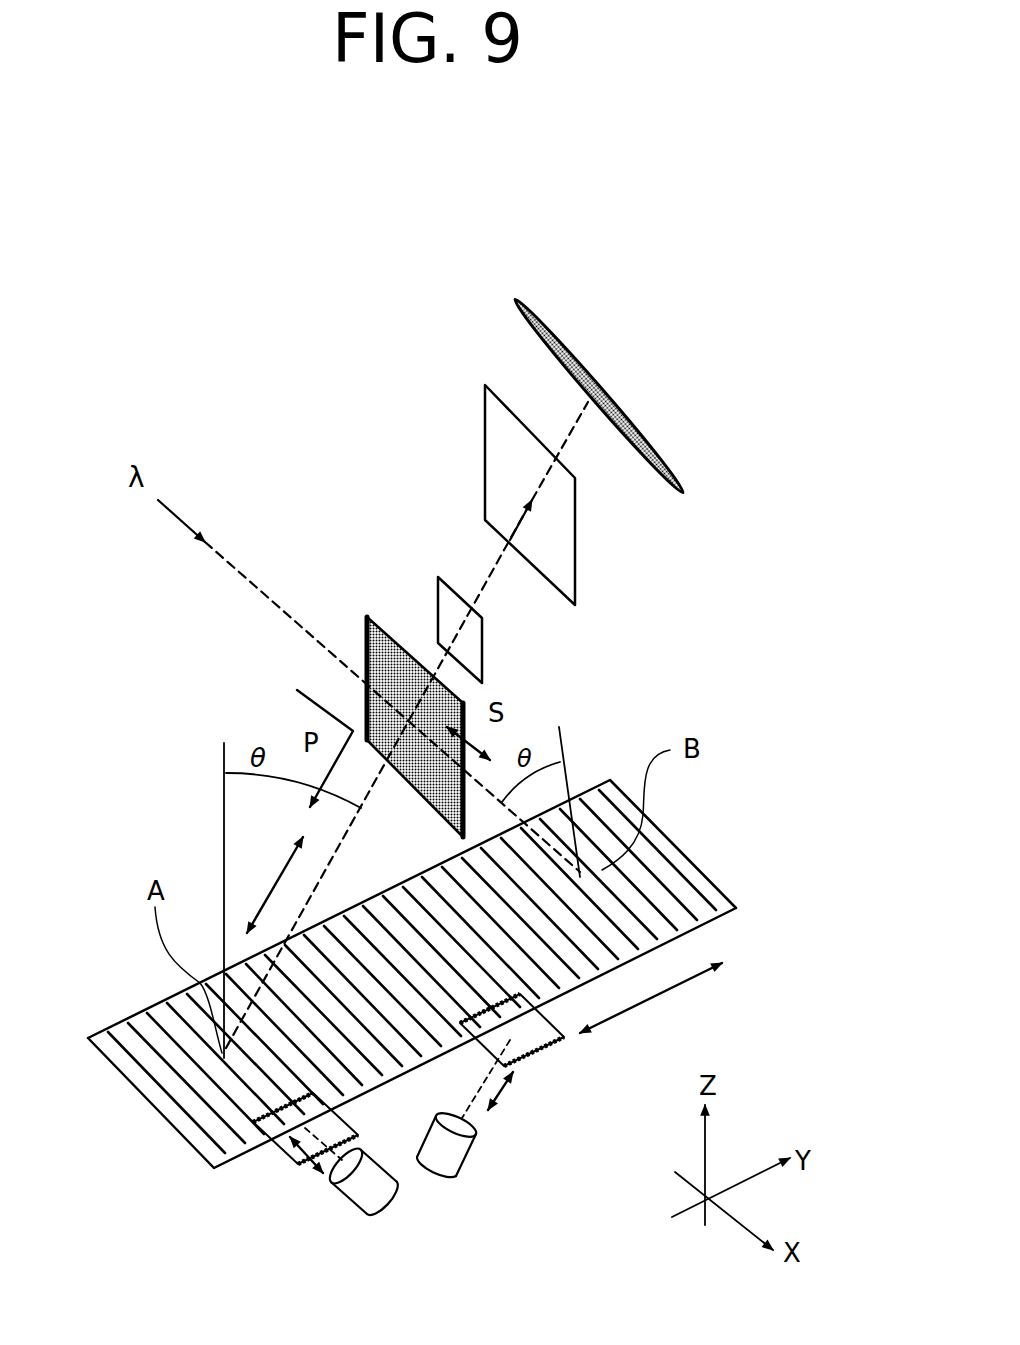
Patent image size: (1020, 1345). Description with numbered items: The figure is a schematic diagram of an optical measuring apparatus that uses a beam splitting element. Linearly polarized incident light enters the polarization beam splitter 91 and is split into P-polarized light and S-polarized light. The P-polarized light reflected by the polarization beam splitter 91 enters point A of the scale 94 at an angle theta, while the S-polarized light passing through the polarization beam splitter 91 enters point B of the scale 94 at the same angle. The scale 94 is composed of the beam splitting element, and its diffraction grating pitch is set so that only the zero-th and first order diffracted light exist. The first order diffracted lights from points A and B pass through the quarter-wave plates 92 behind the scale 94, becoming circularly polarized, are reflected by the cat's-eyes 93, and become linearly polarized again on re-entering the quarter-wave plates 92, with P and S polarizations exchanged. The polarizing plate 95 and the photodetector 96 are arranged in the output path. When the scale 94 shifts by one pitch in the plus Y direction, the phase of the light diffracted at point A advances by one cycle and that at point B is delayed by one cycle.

The polarization beam splitter 91 is at (365, 614).
The quarter-wave plate 92 is at (484, 657).
The cat's-eye 93 is at (398, 1192).
The scale 94 is at (698, 925).
The polarizing plate 95 is at (577, 593).
The photodetector 96 is at (671, 481).